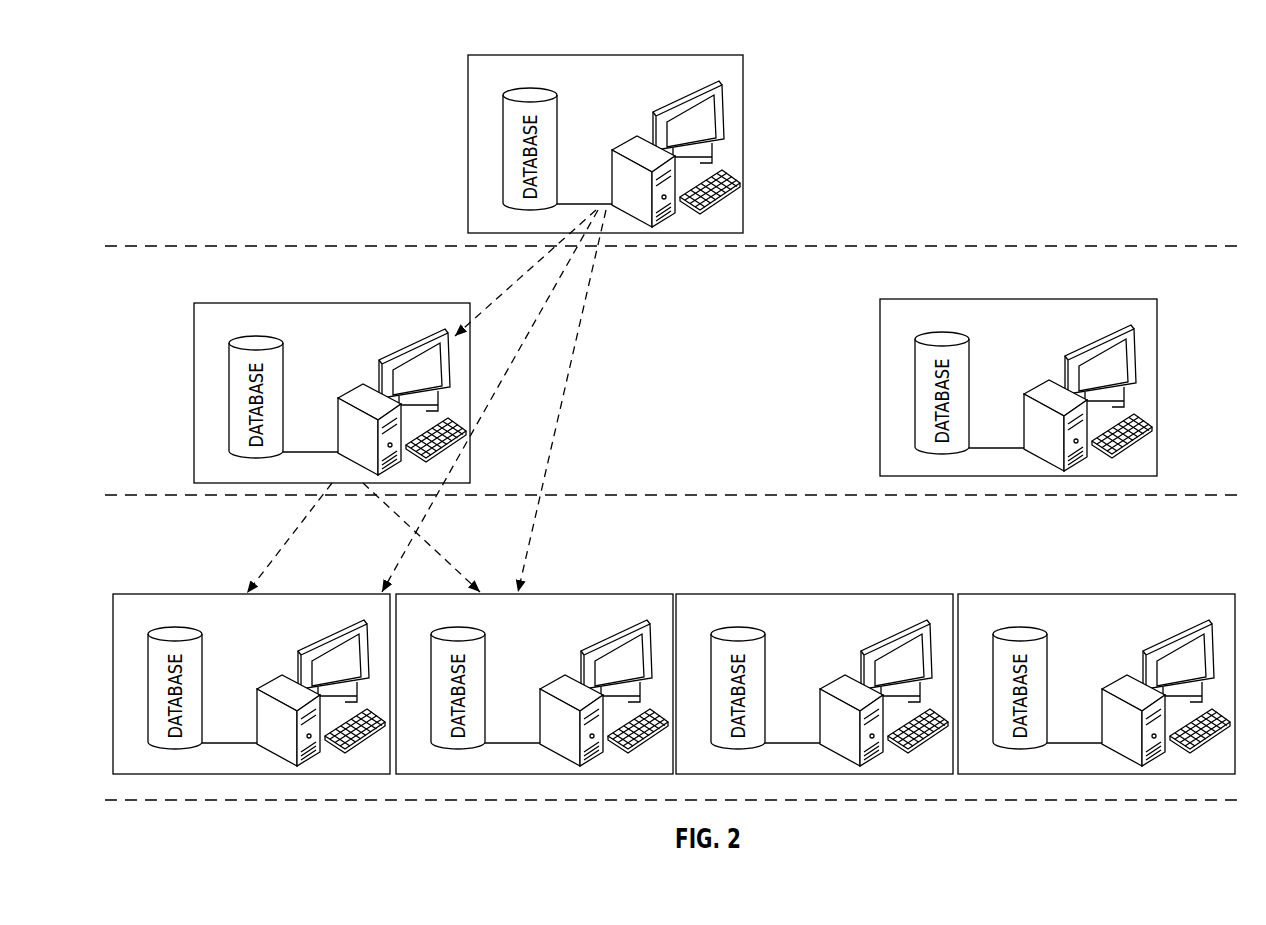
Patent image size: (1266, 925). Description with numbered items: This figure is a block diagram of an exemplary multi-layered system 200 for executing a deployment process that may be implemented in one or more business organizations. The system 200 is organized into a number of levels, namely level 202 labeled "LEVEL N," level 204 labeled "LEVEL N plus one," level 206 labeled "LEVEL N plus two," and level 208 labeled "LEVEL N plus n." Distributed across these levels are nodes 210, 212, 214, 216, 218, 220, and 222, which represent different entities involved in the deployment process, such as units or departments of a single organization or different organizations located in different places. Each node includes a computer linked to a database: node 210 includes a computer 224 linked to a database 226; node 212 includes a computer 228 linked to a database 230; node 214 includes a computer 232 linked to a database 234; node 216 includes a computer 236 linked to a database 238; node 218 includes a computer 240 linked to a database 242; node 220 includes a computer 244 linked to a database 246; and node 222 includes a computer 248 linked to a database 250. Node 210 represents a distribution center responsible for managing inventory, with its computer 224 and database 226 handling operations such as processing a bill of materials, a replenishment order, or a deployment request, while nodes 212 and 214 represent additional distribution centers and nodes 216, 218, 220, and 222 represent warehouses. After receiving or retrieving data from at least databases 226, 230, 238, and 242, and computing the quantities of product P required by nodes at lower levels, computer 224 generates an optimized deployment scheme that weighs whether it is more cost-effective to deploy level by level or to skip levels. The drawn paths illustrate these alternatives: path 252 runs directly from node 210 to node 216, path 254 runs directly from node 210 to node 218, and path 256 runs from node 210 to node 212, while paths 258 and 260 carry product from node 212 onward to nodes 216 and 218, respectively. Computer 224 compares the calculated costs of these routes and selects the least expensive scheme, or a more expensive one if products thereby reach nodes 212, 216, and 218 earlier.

The system 200 is at (1181, 86).
The level 202 is at (203, 92).
The level 204 is at (230, 288).
The level 206 is at (231, 538).
The level 208 is at (233, 851).
The node 210 is at (468, 128).
The node 212 is at (194, 401).
The node 214 is at (880, 396).
The node 216 is at (225, 594).
The node 218 is at (592, 594).
The node 220 is at (813, 594).
The node 222 is at (1107, 594).
The computer 224 is at (621, 143).
The database 226 is at (502, 110).
The computer 228 is at (347, 391).
The database 230 is at (228, 358).
The computer 232 is at (1033, 387).
The database 234 is at (914, 354).
The computer 236 is at (266, 682).
The database 238 is at (147, 649).
The computer 240 is at (549, 682).
The database 242 is at (430, 649).
The computer 244 is at (829, 682).
The database 246 is at (710, 649).
The computer 248 is at (1111, 682).
The database 250 is at (992, 649).
The path 252 is at (494, 395).
The path 254 is at (545, 448).
The path 256 is at (478, 320).
The path 258 is at (303, 522).
The path 260 is at (450, 562).